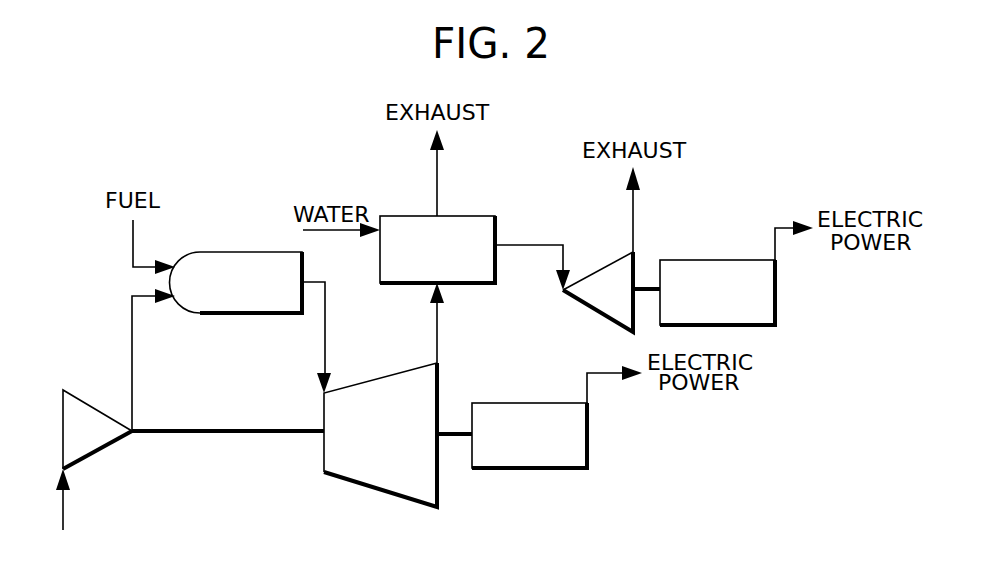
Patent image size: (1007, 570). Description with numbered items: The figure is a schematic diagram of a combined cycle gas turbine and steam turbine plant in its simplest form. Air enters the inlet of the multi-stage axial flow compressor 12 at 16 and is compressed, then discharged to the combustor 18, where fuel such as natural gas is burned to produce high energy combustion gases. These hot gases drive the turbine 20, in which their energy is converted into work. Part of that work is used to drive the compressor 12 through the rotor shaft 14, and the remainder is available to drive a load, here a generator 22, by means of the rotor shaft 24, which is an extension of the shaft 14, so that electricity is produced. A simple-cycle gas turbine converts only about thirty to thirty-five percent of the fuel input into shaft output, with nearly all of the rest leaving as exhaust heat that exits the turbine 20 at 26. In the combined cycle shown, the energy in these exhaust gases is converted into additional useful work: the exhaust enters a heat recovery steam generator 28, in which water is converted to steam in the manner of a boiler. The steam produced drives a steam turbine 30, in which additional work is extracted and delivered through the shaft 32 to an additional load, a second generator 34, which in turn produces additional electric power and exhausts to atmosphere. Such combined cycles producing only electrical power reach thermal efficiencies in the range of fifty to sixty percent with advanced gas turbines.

The multi-stage axial flow compressor 12 is at (97, 438).
The rotor shaft 14 is at (178, 433).
The compressor inlet 16 is at (73, 501).
The combustor 18 is at (250, 292).
The turbine 20 is at (392, 437).
The generator 22 is at (539, 444).
The rotor shaft 24 is at (447, 436).
The turbine exhaust 26 is at (436, 345).
The heat recovery steam generator 28 is at (447, 257).
The steam turbine 30 is at (621, 300).
The shaft 32 is at (645, 287).
The second generator 34 is at (727, 301).